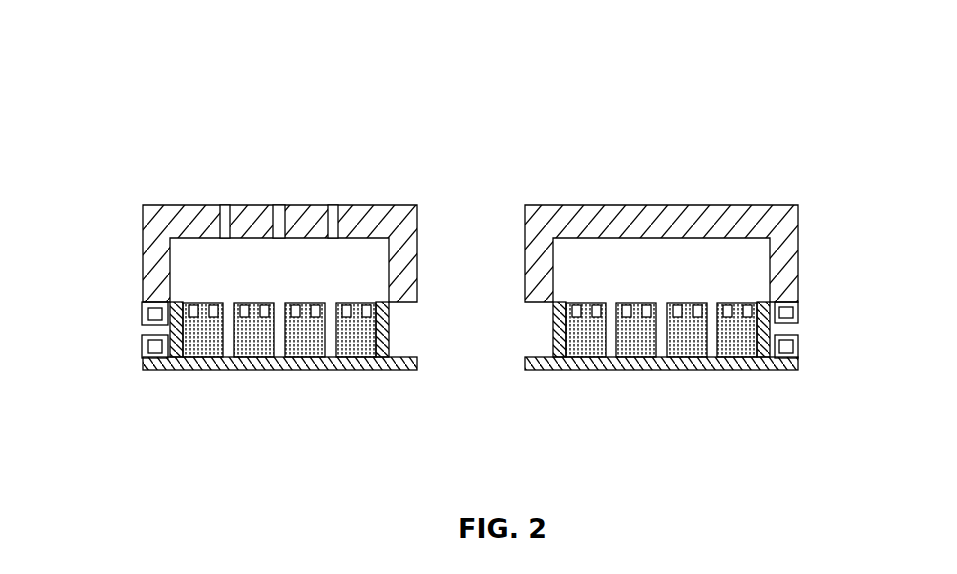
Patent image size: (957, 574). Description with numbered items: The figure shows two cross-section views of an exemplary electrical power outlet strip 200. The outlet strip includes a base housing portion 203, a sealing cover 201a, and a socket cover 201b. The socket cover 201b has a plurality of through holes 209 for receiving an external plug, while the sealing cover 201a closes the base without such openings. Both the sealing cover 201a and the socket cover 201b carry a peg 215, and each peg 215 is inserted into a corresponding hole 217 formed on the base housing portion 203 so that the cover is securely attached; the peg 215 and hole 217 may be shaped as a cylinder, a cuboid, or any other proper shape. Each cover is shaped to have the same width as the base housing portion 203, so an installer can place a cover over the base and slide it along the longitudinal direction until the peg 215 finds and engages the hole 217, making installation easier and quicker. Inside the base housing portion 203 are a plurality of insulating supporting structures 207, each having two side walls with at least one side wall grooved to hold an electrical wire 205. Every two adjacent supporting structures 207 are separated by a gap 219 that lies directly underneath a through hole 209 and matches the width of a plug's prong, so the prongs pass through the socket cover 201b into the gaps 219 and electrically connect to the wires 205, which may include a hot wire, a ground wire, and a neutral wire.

The electrical power outlet strip 200 is at (859, 64).
The sealing cover 201a is at (798, 205).
The socket cover 201b is at (222, 234).
The base housing portion 203 is at (525, 361).
The electrical wire 205 is at (285, 302).
The insulating supporting structure 207 is at (197, 302).
The through hole 209 is at (230, 205).
The peg 215 is at (142, 312).
The hole 217 is at (143, 357).
The gap 219 is at (222, 322).